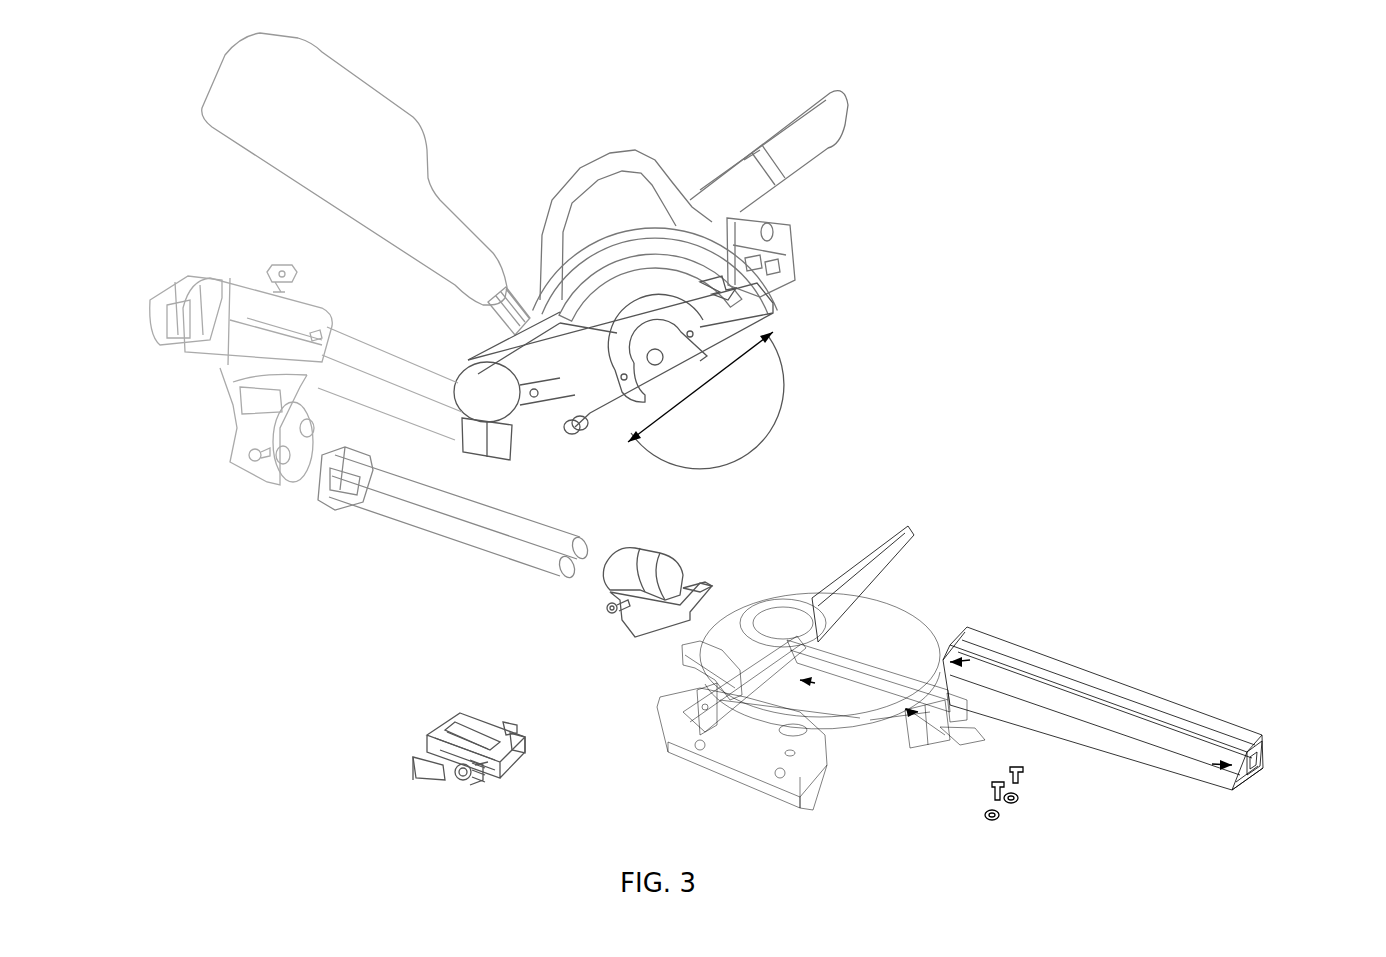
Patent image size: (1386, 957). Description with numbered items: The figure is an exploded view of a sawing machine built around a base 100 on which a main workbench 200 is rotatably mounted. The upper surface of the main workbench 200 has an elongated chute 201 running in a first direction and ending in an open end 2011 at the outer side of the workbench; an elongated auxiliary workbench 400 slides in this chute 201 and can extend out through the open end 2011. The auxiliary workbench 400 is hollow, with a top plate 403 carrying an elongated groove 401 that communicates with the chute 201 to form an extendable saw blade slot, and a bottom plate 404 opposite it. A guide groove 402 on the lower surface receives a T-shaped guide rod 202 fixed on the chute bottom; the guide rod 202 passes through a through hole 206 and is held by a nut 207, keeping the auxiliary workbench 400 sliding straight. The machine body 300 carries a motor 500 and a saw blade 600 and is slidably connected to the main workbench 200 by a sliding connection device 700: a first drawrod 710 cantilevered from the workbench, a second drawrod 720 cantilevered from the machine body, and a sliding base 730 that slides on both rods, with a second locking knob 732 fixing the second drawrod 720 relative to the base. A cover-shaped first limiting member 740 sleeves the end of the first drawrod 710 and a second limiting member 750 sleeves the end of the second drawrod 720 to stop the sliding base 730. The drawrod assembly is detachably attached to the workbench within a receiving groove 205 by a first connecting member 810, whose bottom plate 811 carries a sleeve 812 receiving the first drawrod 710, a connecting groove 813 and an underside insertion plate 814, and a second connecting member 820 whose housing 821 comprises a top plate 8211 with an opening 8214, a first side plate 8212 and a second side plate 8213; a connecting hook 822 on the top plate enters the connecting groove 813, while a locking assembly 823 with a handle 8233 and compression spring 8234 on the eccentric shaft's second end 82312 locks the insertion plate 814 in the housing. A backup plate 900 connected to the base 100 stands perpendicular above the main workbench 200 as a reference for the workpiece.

The base 100 is at (740, 763).
The main workbench 200 is at (837, 727).
The chute 201 is at (867, 683).
The open end 2011 is at (930, 710).
The guide rod 202 is at (997, 790).
The receiving groove 205 is at (717, 653).
The through hole 206 is at (942, 737).
The nut 207 is at (997, 817).
The machine body 300 is at (577, 347).
The auxiliary workbench 400 is at (1118, 683).
The groove 401 is at (1043, 673).
The guide groove 402 is at (1232, 787).
The top plate 403 is at (1190, 720).
The bottom plate 404 is at (1247, 772).
The motor 500 is at (760, 250).
The saw blade 600 is at (760, 395).
The sliding connection device 700 is at (268, 512).
The first drawrod 710 is at (453, 530).
The second drawrod 720 is at (398, 415).
The sliding base 730 is at (243, 307).
The second locking knob 732 is at (287, 273).
The first limiting member 740 is at (333, 480).
The second limiting member 750 is at (183, 313).
The first connecting member 810 is at (590, 607).
The bottom plate 811 is at (677, 612).
The sleeve 812 is at (633, 580).
The connecting groove 813 is at (690, 597).
The insertion plate 814 is at (620, 617).
The second connecting member 820 is at (441, 707).
The housing 821 is at (433, 733).
The top plate 8211 is at (473, 727).
The first side plate 8212 is at (520, 752).
The second side plate 8213 is at (490, 777).
The opening 8214 is at (453, 737).
The connecting hook 822 is at (507, 727).
The locking assembly 823 is at (453, 783).
The handle 8233 is at (430, 770).
The compression spring 8234 is at (477, 772).
The second end 82312 is at (462, 780).
The backup plate 900 is at (845, 600).